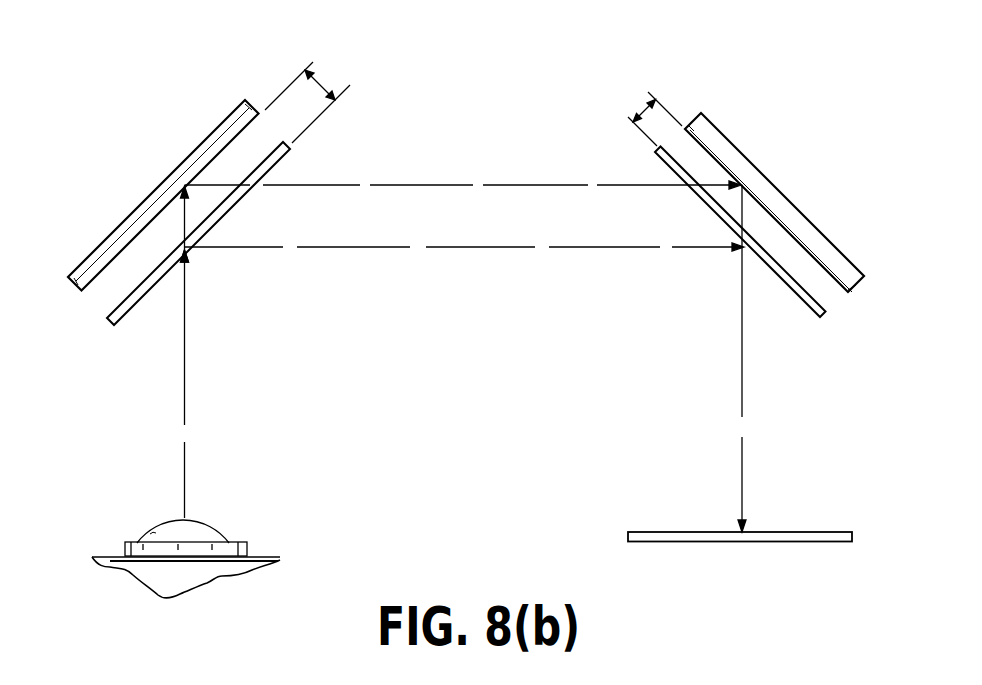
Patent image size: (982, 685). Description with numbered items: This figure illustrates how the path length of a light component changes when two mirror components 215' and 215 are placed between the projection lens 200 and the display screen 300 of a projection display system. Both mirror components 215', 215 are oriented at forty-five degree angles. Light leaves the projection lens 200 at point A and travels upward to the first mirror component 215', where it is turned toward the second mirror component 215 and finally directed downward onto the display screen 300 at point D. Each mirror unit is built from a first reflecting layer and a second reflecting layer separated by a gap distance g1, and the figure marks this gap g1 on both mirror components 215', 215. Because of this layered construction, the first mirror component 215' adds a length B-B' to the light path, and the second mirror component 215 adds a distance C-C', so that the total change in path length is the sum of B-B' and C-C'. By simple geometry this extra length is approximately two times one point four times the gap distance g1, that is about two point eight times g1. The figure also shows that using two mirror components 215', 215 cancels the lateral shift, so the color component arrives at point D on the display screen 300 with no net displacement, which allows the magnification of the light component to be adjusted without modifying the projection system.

The mirror component 215' is at (163, 177).
The mirror component 215 is at (774, 189).
The gap distance g1 is at (327, 83).
The projection lens 200 is at (265, 557).
The display screen 300 is at (805, 533).
The light emission point A is at (181, 521).
The reflection point on mirror 215' B is at (232, 243).
The reflection point on mirror 215' B' is at (192, 164).
The reflection point on mirror 215 C is at (724, 265).
The reflection point on mirror 215 C' is at (765, 279).
The arrival point on screen D is at (737, 530).